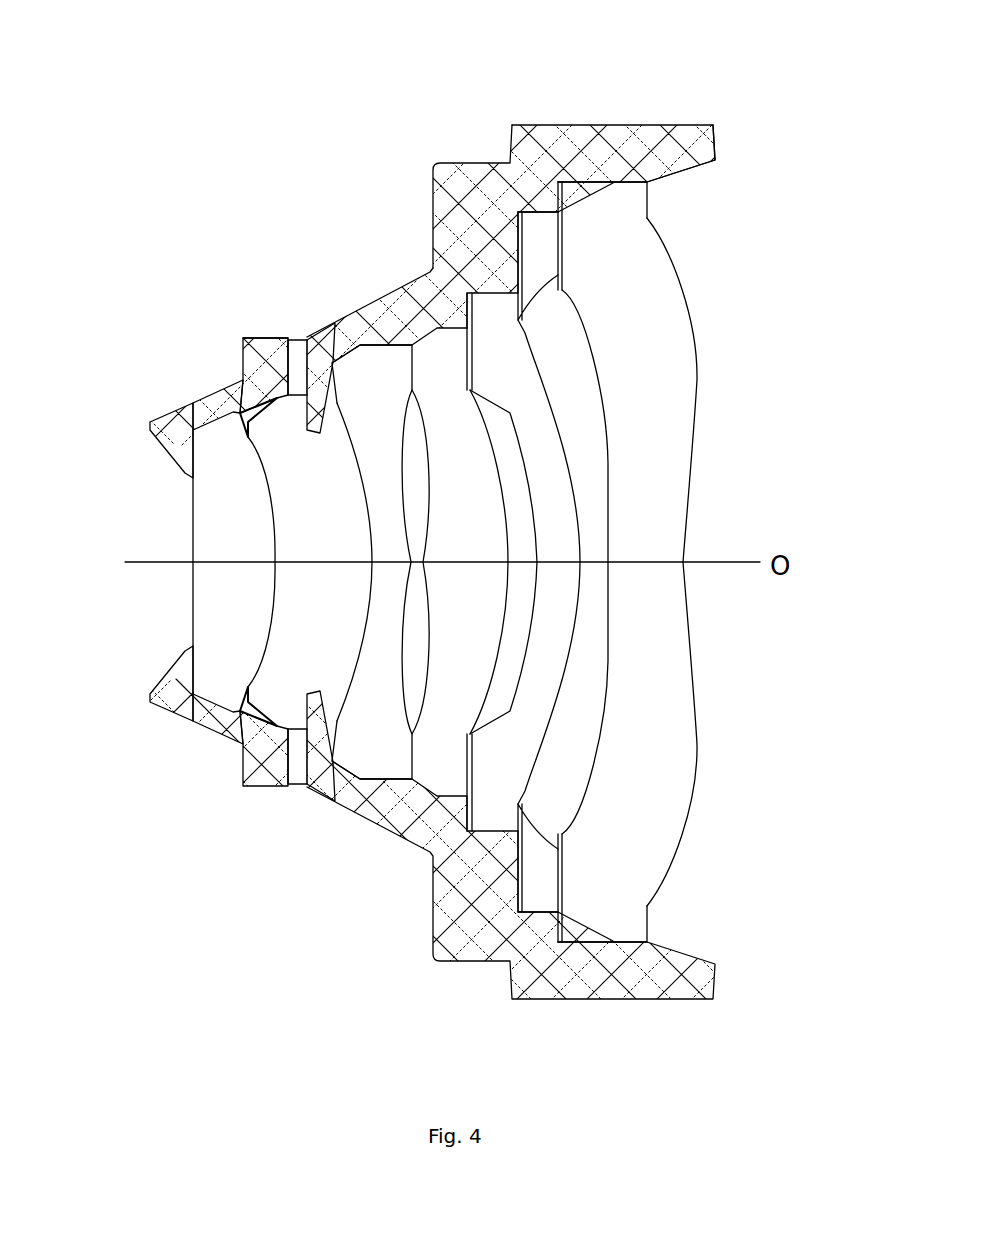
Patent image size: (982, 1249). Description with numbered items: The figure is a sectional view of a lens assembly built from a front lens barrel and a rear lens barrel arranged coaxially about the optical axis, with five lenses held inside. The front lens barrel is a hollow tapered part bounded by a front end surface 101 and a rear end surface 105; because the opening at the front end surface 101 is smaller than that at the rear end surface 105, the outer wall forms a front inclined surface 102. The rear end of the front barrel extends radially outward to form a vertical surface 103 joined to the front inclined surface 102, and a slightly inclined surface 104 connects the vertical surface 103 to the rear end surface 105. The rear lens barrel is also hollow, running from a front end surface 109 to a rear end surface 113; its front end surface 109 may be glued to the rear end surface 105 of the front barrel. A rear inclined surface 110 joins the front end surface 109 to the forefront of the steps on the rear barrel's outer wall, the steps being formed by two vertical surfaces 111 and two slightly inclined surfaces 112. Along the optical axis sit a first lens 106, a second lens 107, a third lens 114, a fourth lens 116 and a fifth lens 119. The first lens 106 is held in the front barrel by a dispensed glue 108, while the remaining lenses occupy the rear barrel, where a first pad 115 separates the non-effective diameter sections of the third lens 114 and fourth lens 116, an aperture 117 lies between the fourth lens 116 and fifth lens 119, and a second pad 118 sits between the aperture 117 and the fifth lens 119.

The front end surface 101 is at (150, 422).
The front inclined surface 102 is at (217, 393).
The vertical surface 103 is at (243, 357).
The slightly inclined surface 104 is at (272, 339).
The rear end surface 105 is at (288, 337).
The first lens 106 is at (212, 678).
The second lens 107 is at (317, 778).
The dispensed glue 108 is at (240, 718).
The front end surface 109 is at (305, 340).
The rear inclined surface 110 is at (370, 345).
The vertical surfaces 111 is at (510, 148).
The slightly inclined surfaces 112 is at (593, 123).
The rear end surface 113 is at (718, 138).
The third lens 114 is at (440, 758).
The first pad 115 is at (510, 775).
The fourth lens 116 is at (473, 750).
The aperture 117 is at (535, 883).
The second pad 118 is at (558, 940).
The fifth lens 119 is at (610, 887).